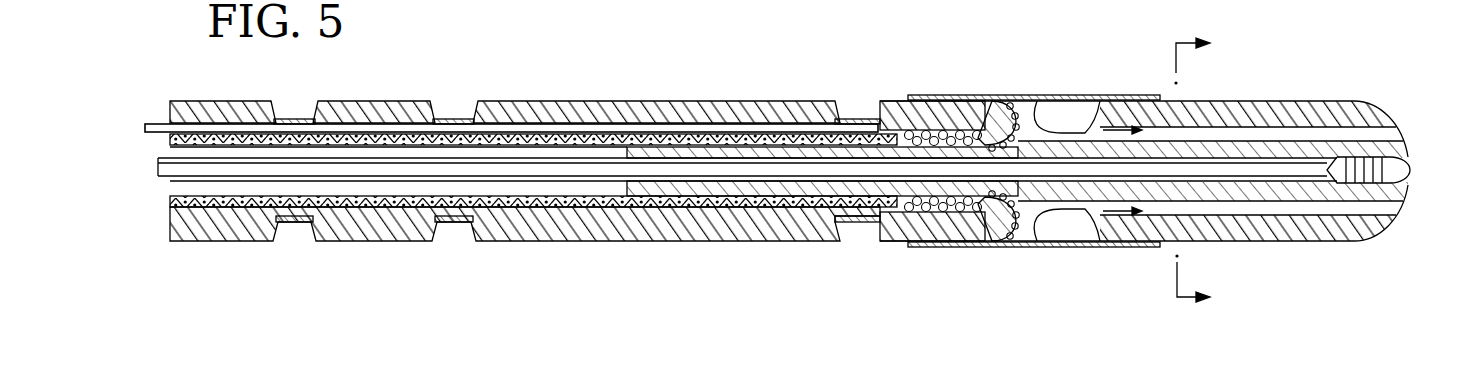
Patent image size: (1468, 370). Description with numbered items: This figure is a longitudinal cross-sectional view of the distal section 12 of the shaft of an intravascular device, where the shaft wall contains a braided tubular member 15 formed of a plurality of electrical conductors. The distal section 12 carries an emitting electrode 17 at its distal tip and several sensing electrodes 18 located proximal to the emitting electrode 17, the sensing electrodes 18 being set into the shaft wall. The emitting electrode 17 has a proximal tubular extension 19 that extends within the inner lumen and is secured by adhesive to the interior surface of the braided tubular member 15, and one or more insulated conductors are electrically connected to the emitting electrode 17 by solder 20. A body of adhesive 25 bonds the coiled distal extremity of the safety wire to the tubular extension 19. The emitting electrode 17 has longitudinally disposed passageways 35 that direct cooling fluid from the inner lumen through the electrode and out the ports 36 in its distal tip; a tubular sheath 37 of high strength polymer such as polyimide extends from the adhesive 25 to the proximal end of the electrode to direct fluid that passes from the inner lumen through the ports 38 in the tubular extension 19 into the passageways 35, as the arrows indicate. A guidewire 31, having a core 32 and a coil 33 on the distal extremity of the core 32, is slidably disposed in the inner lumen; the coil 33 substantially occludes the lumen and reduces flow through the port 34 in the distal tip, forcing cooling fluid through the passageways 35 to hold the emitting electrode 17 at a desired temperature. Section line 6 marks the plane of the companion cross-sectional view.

The distal section 12 is at (667, 100).
The braided tubular member 15 is at (507, 200).
The emitting electrode 17 is at (1230, 102).
The sensing electrodes 18 is at (302, 119).
The proximal tubular extension 19 is at (795, 200).
The solder 20 is at (993, 230).
The adhesive 25 is at (927, 243).
The guidewire 31 is at (1193, 170).
The core 32 is at (250, 170).
The coil 33 is at (1397, 173).
The port 34 is at (1400, 155).
The longitudinally disposed passageways 35 is at (1285, 130).
The ports 36 is at (1380, 133).
The tubular sheath 37 is at (1080, 98).
The ports 38 is at (993, 160).
The section line 6- 6 is at (1201, 170).